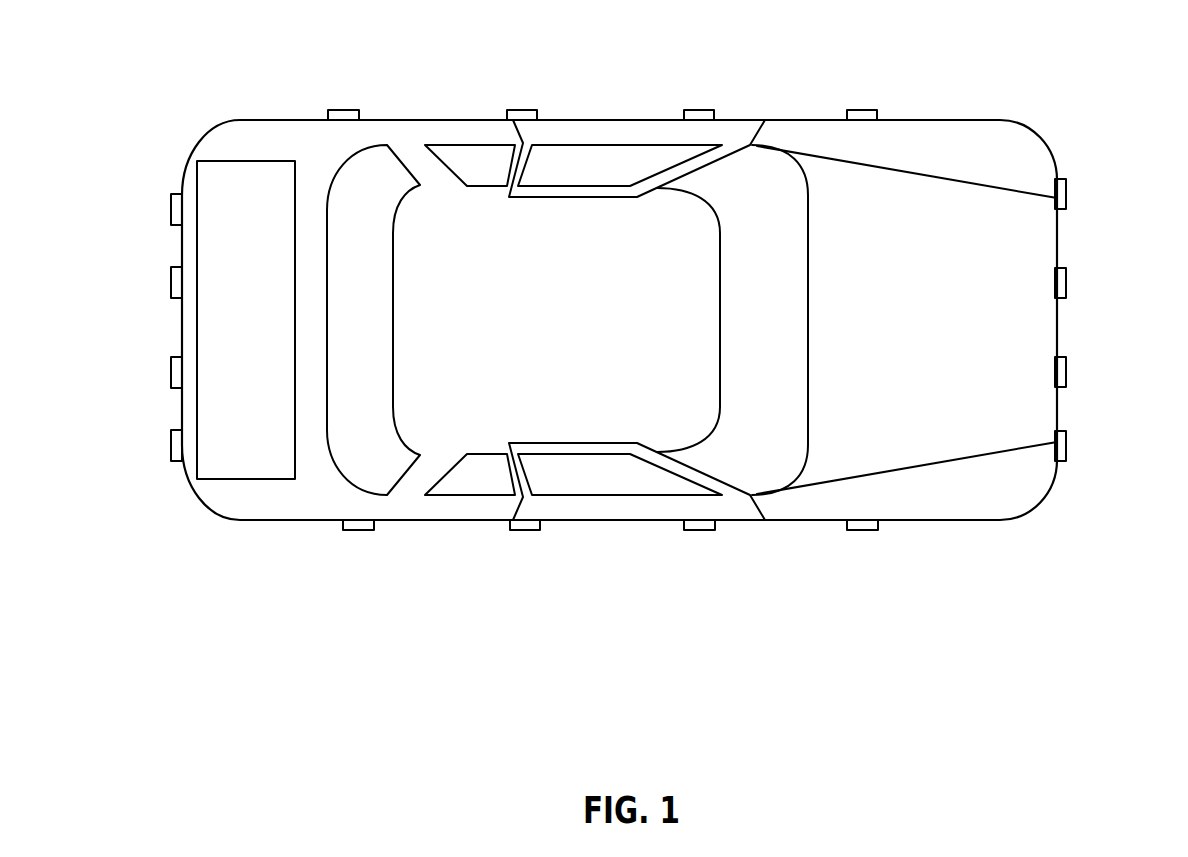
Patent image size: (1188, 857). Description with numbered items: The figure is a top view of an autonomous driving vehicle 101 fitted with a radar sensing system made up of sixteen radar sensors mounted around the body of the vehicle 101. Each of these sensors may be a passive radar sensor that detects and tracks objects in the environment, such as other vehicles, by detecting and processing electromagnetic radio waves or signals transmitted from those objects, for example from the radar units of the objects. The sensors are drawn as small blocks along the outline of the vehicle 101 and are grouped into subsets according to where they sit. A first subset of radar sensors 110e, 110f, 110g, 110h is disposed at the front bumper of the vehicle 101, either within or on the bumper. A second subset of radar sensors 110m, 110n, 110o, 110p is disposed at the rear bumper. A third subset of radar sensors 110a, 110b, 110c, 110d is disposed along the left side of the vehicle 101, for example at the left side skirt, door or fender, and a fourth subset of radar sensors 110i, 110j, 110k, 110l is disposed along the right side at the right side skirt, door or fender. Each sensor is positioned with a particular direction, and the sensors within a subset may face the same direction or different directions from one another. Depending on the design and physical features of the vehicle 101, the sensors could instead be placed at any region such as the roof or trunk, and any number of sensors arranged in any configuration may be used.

The autonomous driving vehicle 101 is at (585, 316).
The radar sensor 110a is at (343, 110).
The radar sensor 110b is at (522, 110).
The radar sensor 110c is at (699, 110).
The radar sensor 110d is at (862, 110).
The radar sensor 110e is at (1066, 194).
The radar sensor 110f is at (1066, 283).
The radar sensor 110g is at (1066, 372).
The radar sensor 110h is at (1066, 446).
The radar sensor 110i is at (862, 530).
The radar sensor 110j is at (700, 530).
The radar sensor 110k is at (525, 530).
The radar sensor 110l is at (359, 530).
The radar sensor 110m is at (171, 446).
The radar sensor 110n is at (171, 373).
The radar sensor 110o is at (171, 283).
The radar sensor 110p is at (171, 210).